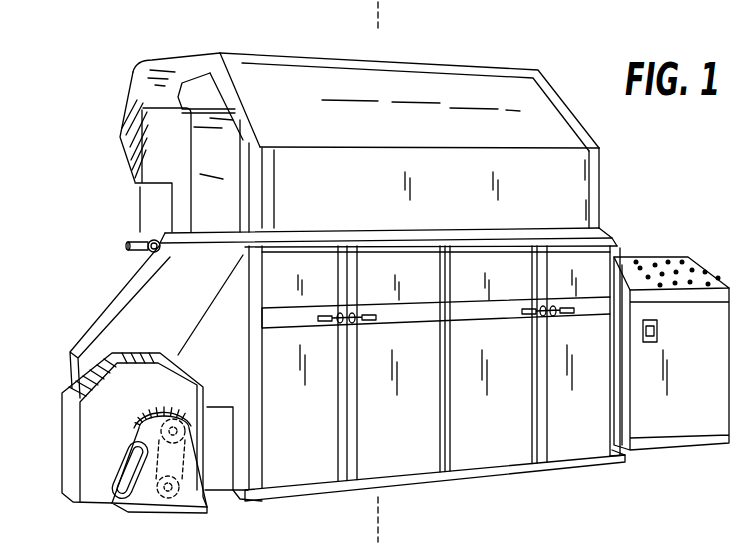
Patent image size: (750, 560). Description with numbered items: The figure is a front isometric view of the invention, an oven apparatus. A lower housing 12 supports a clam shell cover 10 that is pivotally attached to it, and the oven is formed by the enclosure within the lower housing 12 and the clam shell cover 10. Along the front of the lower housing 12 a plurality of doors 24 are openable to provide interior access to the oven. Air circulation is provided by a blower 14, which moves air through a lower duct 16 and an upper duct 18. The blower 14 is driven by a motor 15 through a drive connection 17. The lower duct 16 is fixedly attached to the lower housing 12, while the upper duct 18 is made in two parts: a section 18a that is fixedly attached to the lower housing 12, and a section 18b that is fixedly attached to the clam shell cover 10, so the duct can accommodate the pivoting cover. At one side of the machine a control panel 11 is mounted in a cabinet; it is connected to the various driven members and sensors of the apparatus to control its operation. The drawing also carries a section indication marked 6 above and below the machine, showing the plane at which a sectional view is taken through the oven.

The section line 6 is at (385, 15).
The clam shell cover 10 is at (600, 135).
The control panel 11 is at (690, 258).
The lower housing 12 is at (634, 476).
The blower 14 is at (62, 431).
The motor 15 is at (158, 517).
The lower duct 16 is at (222, 491).
The drive connection 17 is at (145, 440).
The upper duct 18 is at (167, 207).
The section of upper duct 18a is at (132, 286).
The section of upper duct 18b is at (132, 173).
The doors 24 is at (297, 477).